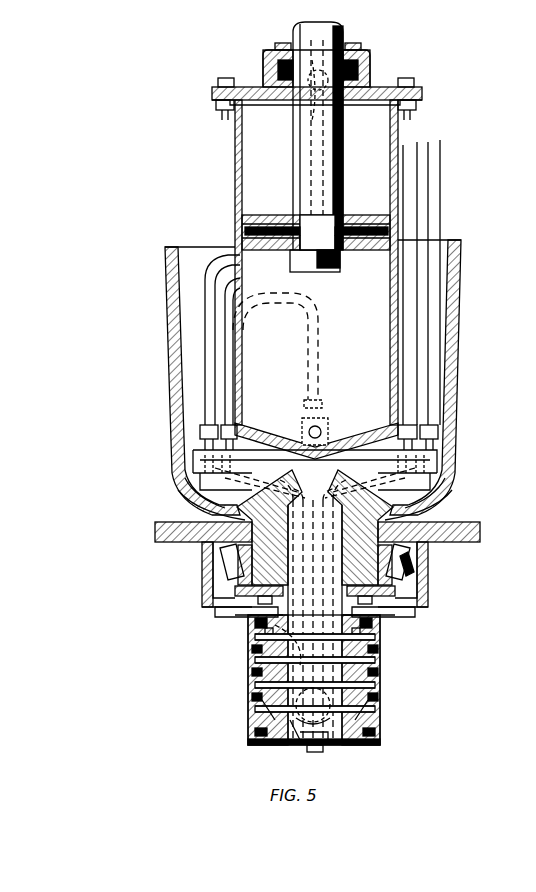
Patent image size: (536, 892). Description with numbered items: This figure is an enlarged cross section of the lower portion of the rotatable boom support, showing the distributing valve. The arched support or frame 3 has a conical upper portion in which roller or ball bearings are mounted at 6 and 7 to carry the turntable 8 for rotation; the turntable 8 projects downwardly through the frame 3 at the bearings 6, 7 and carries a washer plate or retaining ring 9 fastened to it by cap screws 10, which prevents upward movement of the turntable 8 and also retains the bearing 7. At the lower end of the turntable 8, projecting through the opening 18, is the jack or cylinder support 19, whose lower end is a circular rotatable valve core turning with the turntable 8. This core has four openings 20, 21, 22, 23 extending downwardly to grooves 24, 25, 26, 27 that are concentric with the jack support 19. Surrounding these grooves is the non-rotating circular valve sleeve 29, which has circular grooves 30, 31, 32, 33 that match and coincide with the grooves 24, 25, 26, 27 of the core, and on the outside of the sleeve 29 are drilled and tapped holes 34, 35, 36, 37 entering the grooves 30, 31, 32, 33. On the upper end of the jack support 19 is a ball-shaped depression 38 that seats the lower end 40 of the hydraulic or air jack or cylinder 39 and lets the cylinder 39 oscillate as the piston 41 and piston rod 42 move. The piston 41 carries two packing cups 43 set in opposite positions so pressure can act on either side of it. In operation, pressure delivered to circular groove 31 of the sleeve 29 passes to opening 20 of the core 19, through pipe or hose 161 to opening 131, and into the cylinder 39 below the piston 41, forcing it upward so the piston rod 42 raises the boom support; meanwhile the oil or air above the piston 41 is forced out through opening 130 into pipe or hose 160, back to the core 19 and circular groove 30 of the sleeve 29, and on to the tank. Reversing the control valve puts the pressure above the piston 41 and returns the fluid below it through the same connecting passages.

The arched support or frame 3 is at (463, 542).
The bearing 6 is at (236, 643).
The bearing 7 is at (172, 443).
The turntable 8 is at (168, 404).
The washer plate or retaining ring 9 is at (232, 595).
The cap screws 10 is at (207, 604).
The opening 18 is at (405, 565).
The jack or cylinder support 19 is at (420, 500).
The opening 20 is at (165, 460).
The opening 21 is at (200, 480).
The opening 22 is at (432, 468).
The opening 23 is at (442, 488).
The groove 24 is at (248, 668).
The groove 25 is at (250, 717).
The groove 26 is at (380, 692).
The groove 27 is at (380, 718).
The non-rotating circular valve sleeve 29 is at (385, 735).
The circular groove 30 is at (385, 655).
The circular groove 31 is at (248, 678).
The circular groove 32 is at (382, 698).
The circular groove 33 is at (258, 725).
The drilled and tapped hole 34 is at (248, 647).
The drilled and tapped hole 35 is at (252, 702).
The drilled and tapped hole 36 is at (307, 747).
The drilled and tapped hole 37 is at (330, 748).
The ball-shaped depression 38 is at (180, 503).
The hydraulic or air jack or cylinder 39 is at (236, 127).
The lower end of the jack or cylinder 40 is at (378, 425).
The piston 41 is at (240, 197).
The piston rod 42 is at (292, 33).
The packing cups 43 is at (243, 234).
The opening 130 is at (290, 78).
The opening 131 is at (305, 428).
The pipe or hose 160 is at (222, 275).
The pipe or hose 161 is at (215, 307).